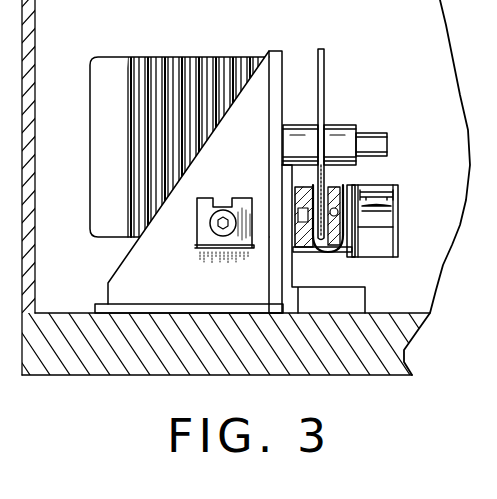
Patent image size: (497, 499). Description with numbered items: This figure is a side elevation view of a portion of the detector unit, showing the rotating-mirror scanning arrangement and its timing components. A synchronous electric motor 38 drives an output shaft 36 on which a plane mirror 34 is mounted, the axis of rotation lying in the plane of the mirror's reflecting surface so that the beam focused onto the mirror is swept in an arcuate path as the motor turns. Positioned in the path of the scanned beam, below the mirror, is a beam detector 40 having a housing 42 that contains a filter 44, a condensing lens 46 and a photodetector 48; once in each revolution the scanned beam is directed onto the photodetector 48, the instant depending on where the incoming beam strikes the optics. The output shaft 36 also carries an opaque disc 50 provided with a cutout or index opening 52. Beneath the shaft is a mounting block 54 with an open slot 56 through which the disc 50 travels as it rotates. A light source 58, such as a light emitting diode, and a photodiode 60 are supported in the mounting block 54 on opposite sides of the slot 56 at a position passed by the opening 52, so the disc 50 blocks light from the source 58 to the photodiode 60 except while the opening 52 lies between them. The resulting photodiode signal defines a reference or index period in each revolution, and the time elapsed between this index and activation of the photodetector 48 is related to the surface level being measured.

The plane mirror 34 is at (390, 133).
The output shaft 36 is at (345, 125).
The synchronous electric motor 38 is at (167, 80).
The beam detector 40 is at (412, 238).
The housing 42 is at (398, 197).
The filter 44 is at (376, 194).
The condensing lens 46 is at (383, 210).
The photodetector 48 is at (386, 237).
The opaque disc 50 is at (325, 63).
The index opening 52 is at (298, 232).
The mounting block 54 is at (345, 266).
The open slot 56 is at (313, 243).
The light source 58 is at (344, 192).
The photodiode 60 is at (298, 205).